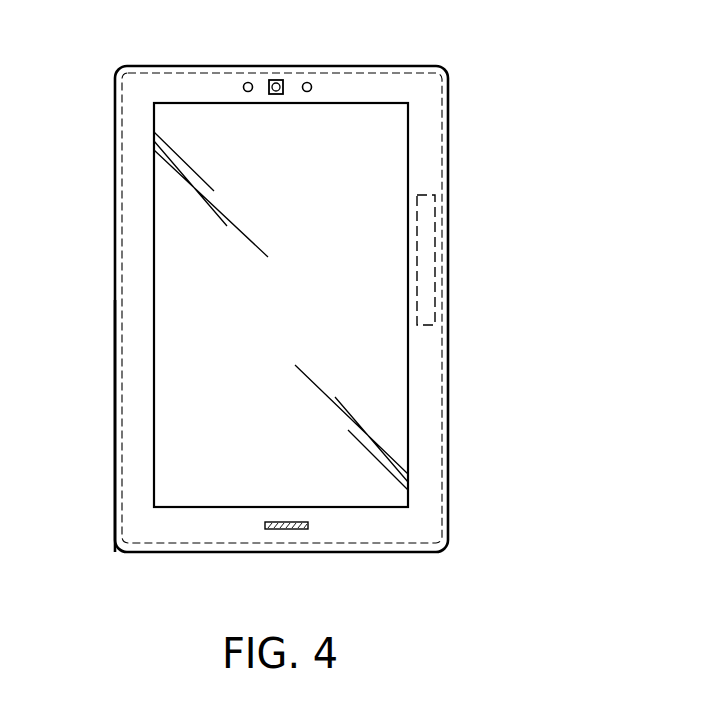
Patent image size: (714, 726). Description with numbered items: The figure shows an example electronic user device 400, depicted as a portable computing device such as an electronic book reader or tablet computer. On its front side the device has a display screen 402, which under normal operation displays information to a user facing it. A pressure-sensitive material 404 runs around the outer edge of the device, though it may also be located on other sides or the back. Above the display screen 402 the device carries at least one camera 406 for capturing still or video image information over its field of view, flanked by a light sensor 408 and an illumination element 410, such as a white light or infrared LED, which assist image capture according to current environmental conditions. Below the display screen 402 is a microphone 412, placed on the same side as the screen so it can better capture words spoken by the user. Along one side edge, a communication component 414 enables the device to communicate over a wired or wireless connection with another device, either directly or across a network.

The electronic user device 400 is at (589, 98).
The display screen 402 is at (155, 113).
The pressure-sensitive material 404 is at (118, 413).
The camera 406 is at (276, 80).
The light sensor 408 is at (245, 84).
The illumination element 410 is at (310, 85).
The microphone 412 is at (283, 530).
The communication component 414 is at (436, 305).